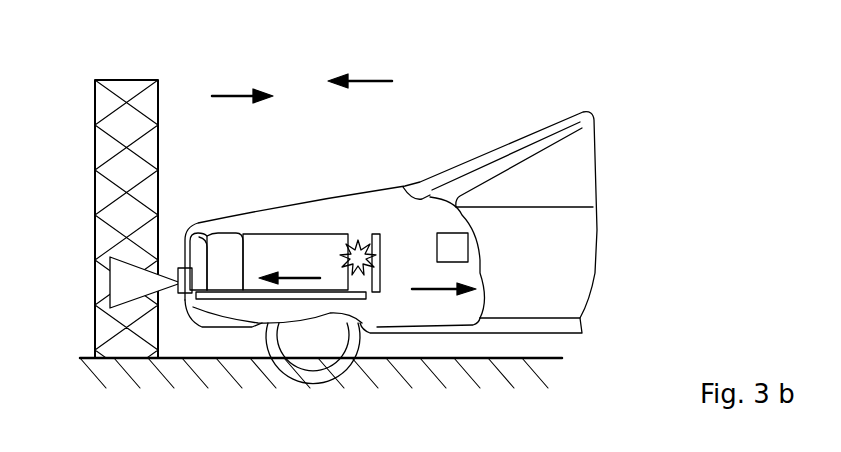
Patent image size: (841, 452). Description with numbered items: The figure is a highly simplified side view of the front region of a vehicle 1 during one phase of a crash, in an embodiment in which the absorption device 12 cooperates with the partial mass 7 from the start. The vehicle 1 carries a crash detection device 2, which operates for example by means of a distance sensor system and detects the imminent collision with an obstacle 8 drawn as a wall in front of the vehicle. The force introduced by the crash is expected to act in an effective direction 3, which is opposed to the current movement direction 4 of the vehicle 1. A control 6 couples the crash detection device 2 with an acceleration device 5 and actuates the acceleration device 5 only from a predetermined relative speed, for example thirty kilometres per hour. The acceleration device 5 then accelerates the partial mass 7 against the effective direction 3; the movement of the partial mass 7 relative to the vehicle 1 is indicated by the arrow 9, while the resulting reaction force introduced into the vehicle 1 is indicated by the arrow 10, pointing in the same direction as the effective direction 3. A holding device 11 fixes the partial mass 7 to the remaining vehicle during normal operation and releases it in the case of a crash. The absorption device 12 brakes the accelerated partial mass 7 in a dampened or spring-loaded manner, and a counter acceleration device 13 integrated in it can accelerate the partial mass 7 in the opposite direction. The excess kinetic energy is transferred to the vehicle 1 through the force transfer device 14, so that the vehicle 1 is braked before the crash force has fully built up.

The vehicle 1 is at (527, 119).
The crash detection device 2 is at (181, 268).
The effective direction 3 is at (232, 93).
The movement direction 4 is at (367, 80).
The acceleration device 5 is at (383, 236).
The control 6 is at (450, 247).
The partial mass 7 is at (312, 248).
The obstacle 8 is at (97, 215).
The arrow 9 is at (290, 285).
The arrow 10 is at (428, 292).
The holding device 11 is at (359, 232).
The absorption device 12 is at (226, 248).
The counter acceleration device 13 is at (202, 247).
The force transfer device 14 is at (260, 293).